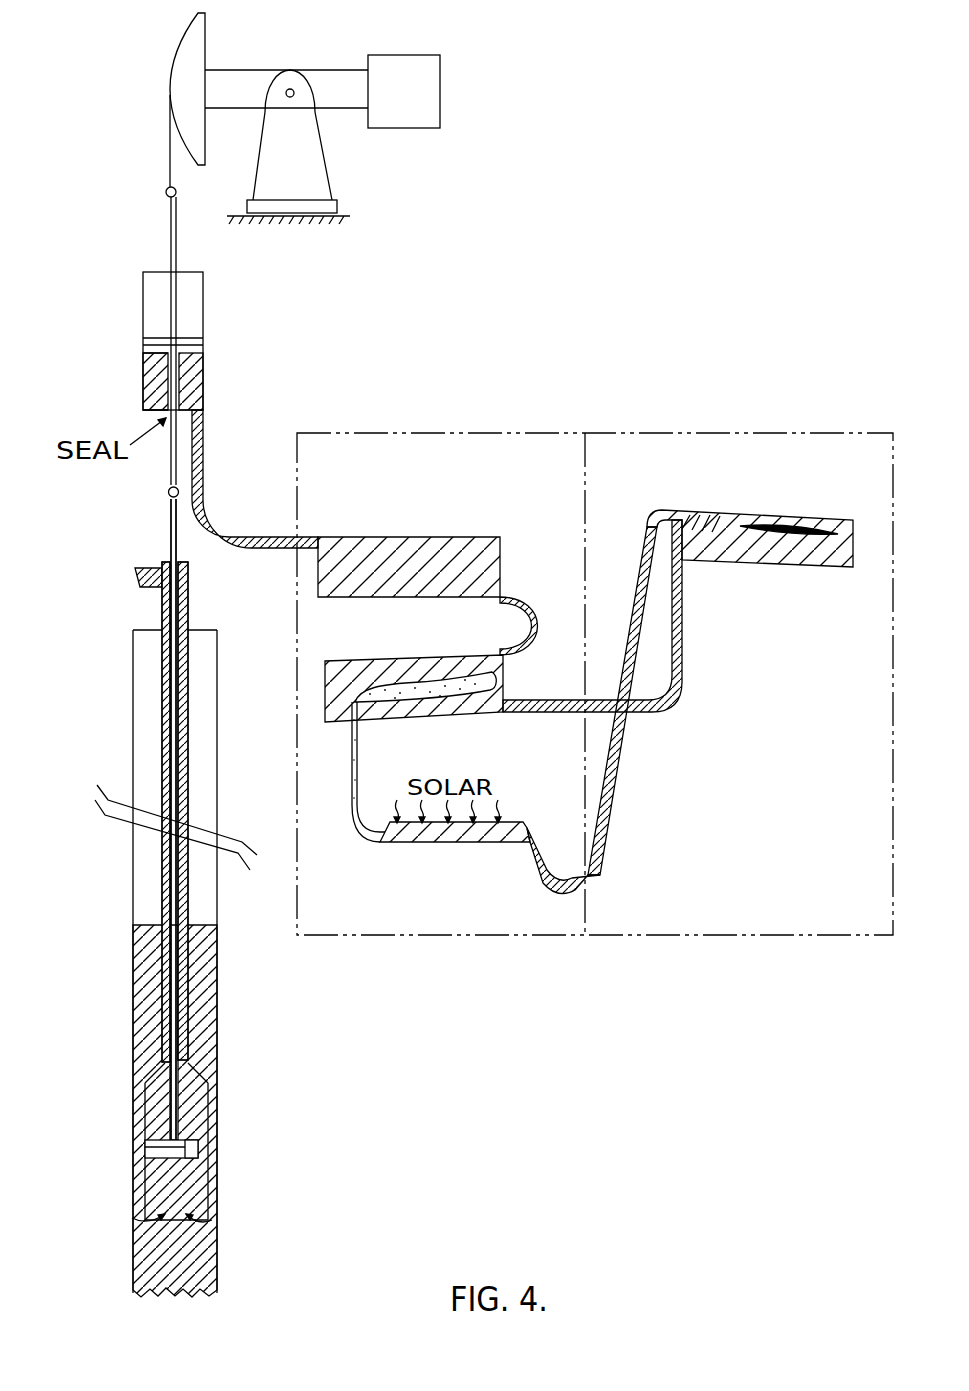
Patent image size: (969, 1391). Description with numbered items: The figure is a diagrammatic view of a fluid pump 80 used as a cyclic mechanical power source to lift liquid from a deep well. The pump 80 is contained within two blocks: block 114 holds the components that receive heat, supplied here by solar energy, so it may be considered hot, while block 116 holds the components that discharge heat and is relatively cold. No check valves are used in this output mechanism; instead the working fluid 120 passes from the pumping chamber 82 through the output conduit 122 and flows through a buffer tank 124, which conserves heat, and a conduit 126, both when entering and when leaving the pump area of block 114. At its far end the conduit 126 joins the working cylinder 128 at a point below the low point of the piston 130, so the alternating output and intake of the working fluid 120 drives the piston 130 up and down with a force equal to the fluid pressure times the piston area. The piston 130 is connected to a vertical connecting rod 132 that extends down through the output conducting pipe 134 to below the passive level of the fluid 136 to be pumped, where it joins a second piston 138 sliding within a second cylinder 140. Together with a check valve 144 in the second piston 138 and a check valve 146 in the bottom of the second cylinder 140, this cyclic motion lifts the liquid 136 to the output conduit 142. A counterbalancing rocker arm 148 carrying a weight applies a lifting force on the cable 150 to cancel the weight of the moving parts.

The pump 80 is at (596, 410).
The pumping chamber 82 is at (415, 715).
The block 114 is at (348, 465).
The block 116 is at (638, 465).
The working fluid 120 is at (158, 380).
The output conduit 122 is at (527, 620).
The buffer tank 124 is at (481, 537).
The conduit 126 is at (205, 481).
The working cylinder 128 is at (205, 326).
The piston 130 is at (190, 356).
The connecting rod 132 is at (178, 712).
The output conducting pipe 134 is at (188, 770).
The fluid to be pumped 136 is at (200, 925).
The second piston 138 is at (162, 1160).
The second cylinder 140 is at (212, 1097).
The output conduit 142 is at (148, 567).
The check valve 144 is at (200, 1172).
The check valve 146 is at (195, 1240).
The counterbalancing rocker arm 148 is at (263, 70).
The cable 150 is at (170, 150).